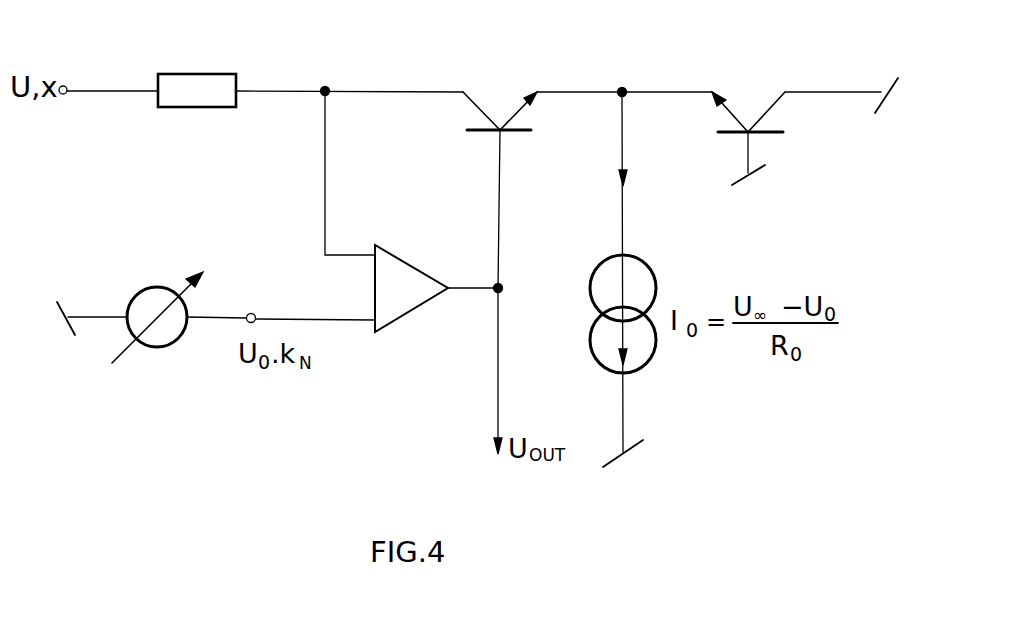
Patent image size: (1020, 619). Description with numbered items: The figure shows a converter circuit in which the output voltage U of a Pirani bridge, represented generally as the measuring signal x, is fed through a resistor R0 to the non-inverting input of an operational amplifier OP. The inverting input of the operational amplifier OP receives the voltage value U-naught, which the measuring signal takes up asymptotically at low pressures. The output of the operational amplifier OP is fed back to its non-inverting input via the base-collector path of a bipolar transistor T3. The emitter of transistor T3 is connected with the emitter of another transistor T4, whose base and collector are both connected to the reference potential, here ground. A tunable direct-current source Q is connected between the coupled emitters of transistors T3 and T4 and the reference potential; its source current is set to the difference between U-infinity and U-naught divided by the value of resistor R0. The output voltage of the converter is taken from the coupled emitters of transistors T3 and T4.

The resistor R0 is at (197, 74).
The bipolar transistor T3 is at (500, 91).
The transistor T4 is at (748, 119).
The operational amplifier OP is at (411, 294).
The tunable direct-current source Q is at (605, 279).